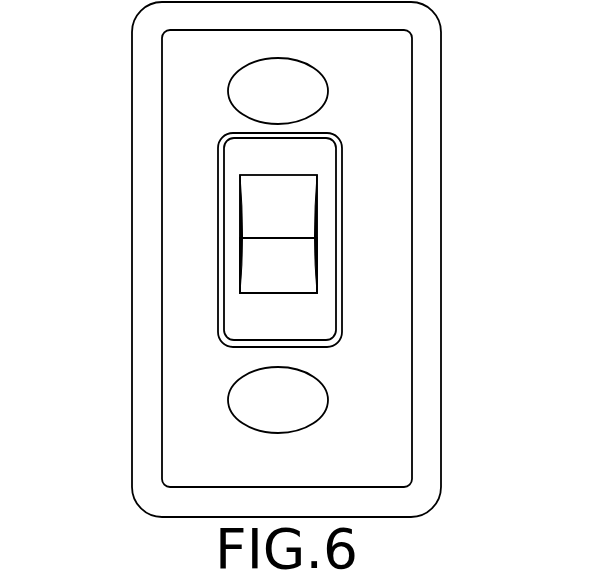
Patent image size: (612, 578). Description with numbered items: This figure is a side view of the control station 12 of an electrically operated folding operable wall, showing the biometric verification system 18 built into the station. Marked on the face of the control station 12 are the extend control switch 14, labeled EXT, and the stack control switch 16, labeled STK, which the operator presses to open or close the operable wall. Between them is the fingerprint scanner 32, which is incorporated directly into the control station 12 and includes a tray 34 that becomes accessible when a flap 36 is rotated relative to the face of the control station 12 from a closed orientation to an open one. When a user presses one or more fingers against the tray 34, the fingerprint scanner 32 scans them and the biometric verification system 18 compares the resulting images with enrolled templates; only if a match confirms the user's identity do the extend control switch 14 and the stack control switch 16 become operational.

The control station 12 is at (453, 178).
The extend control switch 14 is at (329, 82).
The stack control switch 16 is at (328, 398).
The biometric verification system 18 is at (332, 278).
The fingerprint scanner 32 is at (217, 238).
The tray 34 is at (257, 285).
The flap 36 is at (205, 148).